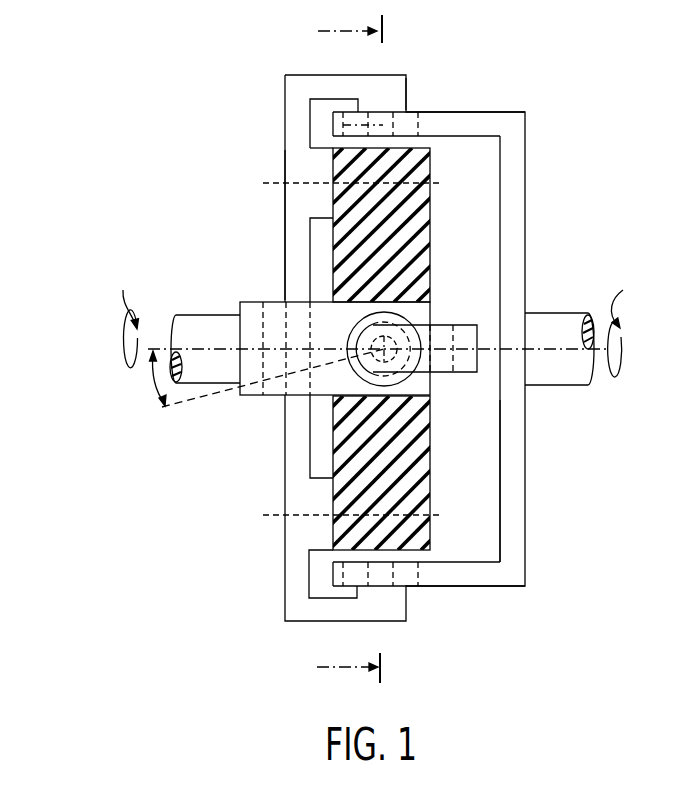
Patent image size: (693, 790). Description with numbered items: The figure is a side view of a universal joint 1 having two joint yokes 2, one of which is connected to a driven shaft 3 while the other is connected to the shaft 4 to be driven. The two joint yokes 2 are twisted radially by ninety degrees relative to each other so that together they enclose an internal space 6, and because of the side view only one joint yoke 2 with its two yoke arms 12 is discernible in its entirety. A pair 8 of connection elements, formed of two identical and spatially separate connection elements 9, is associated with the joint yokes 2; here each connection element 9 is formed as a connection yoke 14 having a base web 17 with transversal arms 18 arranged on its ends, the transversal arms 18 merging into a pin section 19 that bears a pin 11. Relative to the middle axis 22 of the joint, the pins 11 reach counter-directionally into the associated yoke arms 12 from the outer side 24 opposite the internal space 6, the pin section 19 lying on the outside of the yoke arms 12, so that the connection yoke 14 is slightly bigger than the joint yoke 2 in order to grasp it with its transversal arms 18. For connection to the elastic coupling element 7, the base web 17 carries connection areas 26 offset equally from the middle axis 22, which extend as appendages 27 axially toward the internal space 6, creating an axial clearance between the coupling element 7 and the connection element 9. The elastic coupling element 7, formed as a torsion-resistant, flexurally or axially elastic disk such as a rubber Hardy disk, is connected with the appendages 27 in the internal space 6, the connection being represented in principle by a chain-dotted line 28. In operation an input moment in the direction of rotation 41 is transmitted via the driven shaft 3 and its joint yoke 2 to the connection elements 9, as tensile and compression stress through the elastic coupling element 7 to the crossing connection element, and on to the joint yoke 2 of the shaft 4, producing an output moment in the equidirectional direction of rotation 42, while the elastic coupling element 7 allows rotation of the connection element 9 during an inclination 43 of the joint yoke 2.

The universal joint 1 is at (582, 172).
The joint yoke 2 is at (513, 245).
The driven shaft 3 is at (552, 373).
The shaft to be driven 4 is at (198, 320).
The internal space 6 is at (483, 552).
The elastic coupling element 7 is at (405, 440).
The pair of connection elements 8 is at (287, 235).
The connection element 9 is at (278, 436).
The pin 11 is at (343, 125).
The yoke arm 12 is at (452, 118).
The connection yoke 14 is at (293, 433).
The base web 17 is at (297, 278).
The transversal arm 18 is at (322, 88).
The pin section 19 is at (395, 90).
The middle axis of the joint 22 is at (535, 347).
The outer side 24 is at (458, 588).
The connection area 26 is at (274, 543).
The appendage 27 is at (317, 488).
The chain-dotted line 28 is at (275, 517).
The direction of rotation 41 is at (620, 321).
The direction of rotation 42 is at (126, 317).
The inclination 43 is at (153, 386).